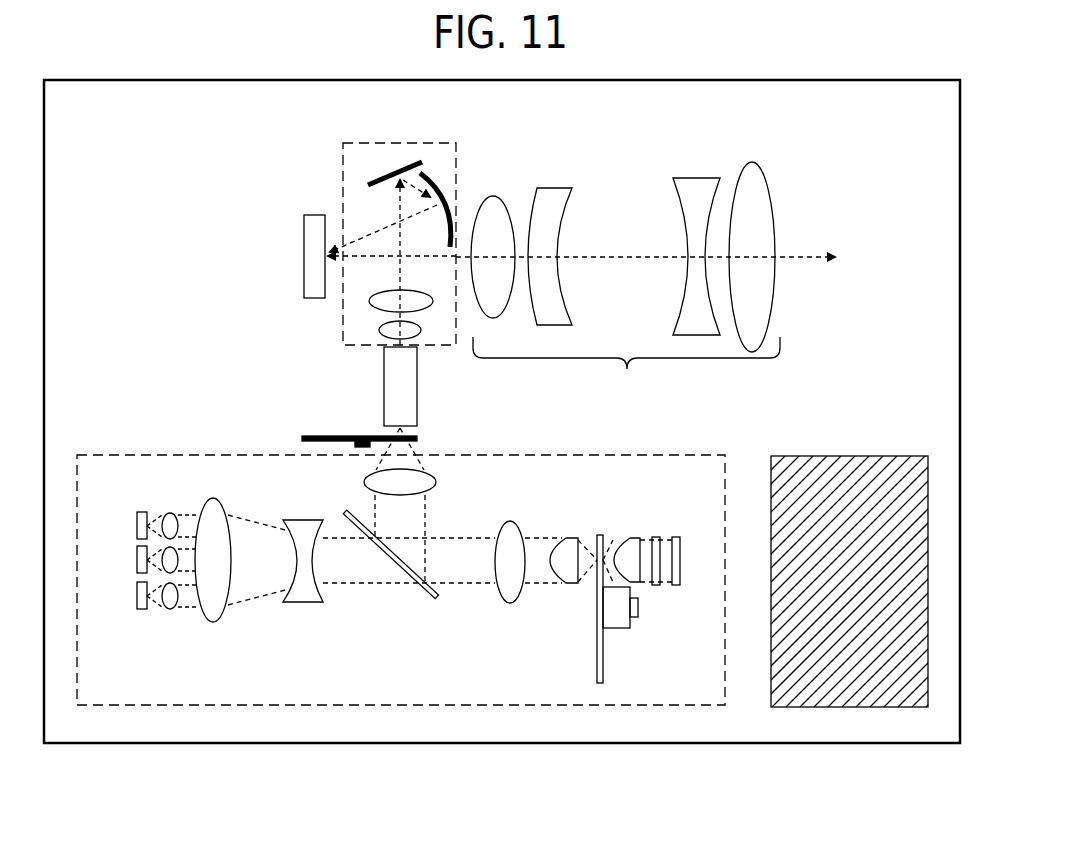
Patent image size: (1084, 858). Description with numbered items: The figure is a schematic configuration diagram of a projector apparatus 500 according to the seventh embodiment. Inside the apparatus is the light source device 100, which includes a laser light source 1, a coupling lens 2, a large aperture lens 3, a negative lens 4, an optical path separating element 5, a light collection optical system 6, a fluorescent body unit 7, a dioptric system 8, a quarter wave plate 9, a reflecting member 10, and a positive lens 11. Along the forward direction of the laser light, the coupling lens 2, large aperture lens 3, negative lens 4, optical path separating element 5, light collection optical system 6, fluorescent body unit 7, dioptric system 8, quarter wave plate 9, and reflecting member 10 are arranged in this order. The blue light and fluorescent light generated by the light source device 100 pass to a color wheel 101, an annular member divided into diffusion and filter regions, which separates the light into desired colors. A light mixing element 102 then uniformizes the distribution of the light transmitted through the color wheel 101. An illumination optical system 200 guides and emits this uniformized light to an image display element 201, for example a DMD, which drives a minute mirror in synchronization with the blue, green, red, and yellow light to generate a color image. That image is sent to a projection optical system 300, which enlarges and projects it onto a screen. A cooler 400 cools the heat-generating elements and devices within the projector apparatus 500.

The laser light source 1 is at (130, 507).
The coupling lens 2 is at (170, 610).
The large aperture lens 3 is at (215, 622).
The negative lens 4 is at (305, 602).
The optical path separating element 5 is at (400, 570).
The light collection optical system 6 is at (512, 603).
The fluorescent body unit 7 is at (603, 638).
The dioptric system 8 is at (630, 537).
The quarter wave plate 9 is at (656, 535).
The reflecting member 10 is at (680, 552).
The positive lens 11 is at (436, 482).
The light source device 100 is at (597, 455).
The color wheel 101 is at (321, 436).
The light mixing element 102 is at (395, 375).
The illumination optical system 200 is at (388, 143).
The image display element 201 is at (310, 215).
The projection optical system 300 is at (645, 280).
The cooler 400 is at (850, 456).
The projector apparatus 500 is at (680, 63).